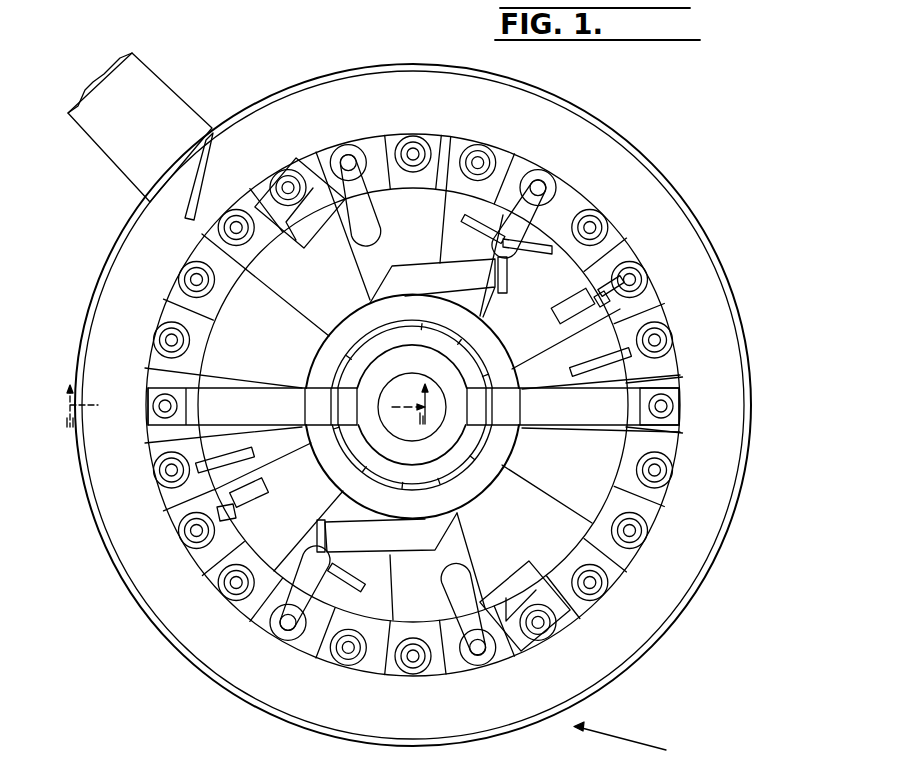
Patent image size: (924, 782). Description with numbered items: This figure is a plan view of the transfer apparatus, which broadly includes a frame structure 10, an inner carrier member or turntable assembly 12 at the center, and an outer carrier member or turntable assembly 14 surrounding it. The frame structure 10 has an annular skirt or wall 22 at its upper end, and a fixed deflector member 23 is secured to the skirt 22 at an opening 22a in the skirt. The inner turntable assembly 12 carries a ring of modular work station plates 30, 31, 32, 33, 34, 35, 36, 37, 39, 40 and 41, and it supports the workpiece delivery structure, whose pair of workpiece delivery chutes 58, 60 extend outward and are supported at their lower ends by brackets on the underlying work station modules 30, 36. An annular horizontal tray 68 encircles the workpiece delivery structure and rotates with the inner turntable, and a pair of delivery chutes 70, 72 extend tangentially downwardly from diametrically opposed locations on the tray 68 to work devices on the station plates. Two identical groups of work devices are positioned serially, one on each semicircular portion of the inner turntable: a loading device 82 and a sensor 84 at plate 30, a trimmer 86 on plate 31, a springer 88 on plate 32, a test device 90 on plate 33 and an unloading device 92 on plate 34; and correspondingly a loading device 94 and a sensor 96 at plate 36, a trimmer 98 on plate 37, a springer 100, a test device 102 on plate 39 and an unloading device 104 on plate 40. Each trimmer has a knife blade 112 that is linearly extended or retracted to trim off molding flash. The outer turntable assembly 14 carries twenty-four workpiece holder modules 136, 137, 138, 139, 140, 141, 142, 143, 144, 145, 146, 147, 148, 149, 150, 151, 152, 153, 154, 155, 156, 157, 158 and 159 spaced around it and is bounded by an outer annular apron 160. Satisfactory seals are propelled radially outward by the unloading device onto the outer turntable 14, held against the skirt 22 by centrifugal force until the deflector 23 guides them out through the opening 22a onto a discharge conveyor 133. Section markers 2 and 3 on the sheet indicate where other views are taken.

The frame structure 10 is at (724, 548).
The inner carrier member or turntable assembly 12 is at (618, 311).
The outer carrier member or turntable assembly 14 is at (678, 313).
The annular skirt or wall 22 is at (102, 542).
The opening 22a is at (146, 180).
The fixed deflector member 23 is at (207, 173).
The modular work station plate 30 is at (290, 450).
The modular work station plate 31 is at (304, 524).
The modular work station plate 32 is at (424, 606).
The modular work station plate 33 is at (453, 547).
The modular work station plate 34 is at (520, 558).
The modular work station plate 35 is at (562, 462).
The modular work station plate 36 is at (601, 421).
The modular work station plate 37 is at (546, 342).
The modular work station plate 39 is at (423, 230).
The modular work station plate 40 is at (330, 302).
The modular work station plate 41 is at (276, 354).
The workpiece delivery chute 58 is at (268, 422).
The workpiece delivery chute 60 is at (586, 422).
The annular horizontal tray 68 is at (328, 388).
The delivery chute 70 is at (376, 549).
The delivery chute 72 is at (470, 248).
The loading device 82 is at (147, 420).
The sensor 84 is at (197, 465).
The trimmer 86 is at (263, 492).
The springer 88 is at (283, 622).
The test device 90 is at (446, 643).
The unloading device 92 is at (555, 607).
The loading device 94 is at (678, 413).
The sensor 96 is at (585, 363).
The trimmer 98 is at (568, 312).
The springer 100 is at (565, 187).
The test device 102 is at (380, 157).
The unloading device 104 is at (300, 216).
The knife blade 112 is at (600, 295).
The discharge conveyor 133 is at (167, 95).
The workpiece holder module 136 is at (150, 377).
The workpiece holder module 137 is at (153, 447).
The workpiece holder module 138 is at (451, 197).
The workpiece holder module 139 is at (213, 575).
The workpiece holder module 140 is at (228, 682).
The workpiece holder module 141 is at (323, 653).
The workpiece holder module 142 is at (400, 675).
The workpiece holder module 143 is at (463, 670).
The workpiece holder module 144 is at (525, 652).
The workpiece holder module 145 is at (616, 590).
The workpiece holder module 146 is at (629, 562).
The workpiece holder module 147 is at (671, 460).
The workpiece holder module 148 is at (679, 383).
The workpiece holder module 149 is at (669, 328).
The workpiece holder module 150 is at (636, 250).
The workpiece holder module 151 is at (612, 230).
The workpiece holder module 152 is at (535, 163).
The workpiece holder module 153 is at (503, 153).
The workpiece holder module 154 is at (436, 135).
The workpiece holder module 155 is at (331, 152).
The workpiece holder module 156 is at (300, 163).
The workpiece holder module 157 is at (213, 232).
The workpiece holder module 158 is at (200, 250).
The workpiece holder module 159 is at (163, 310).
The outer annular apron 160 is at (701, 487).
The section line 2- 2 is at (239, 408).
The view arrow 3 is at (620, 752).